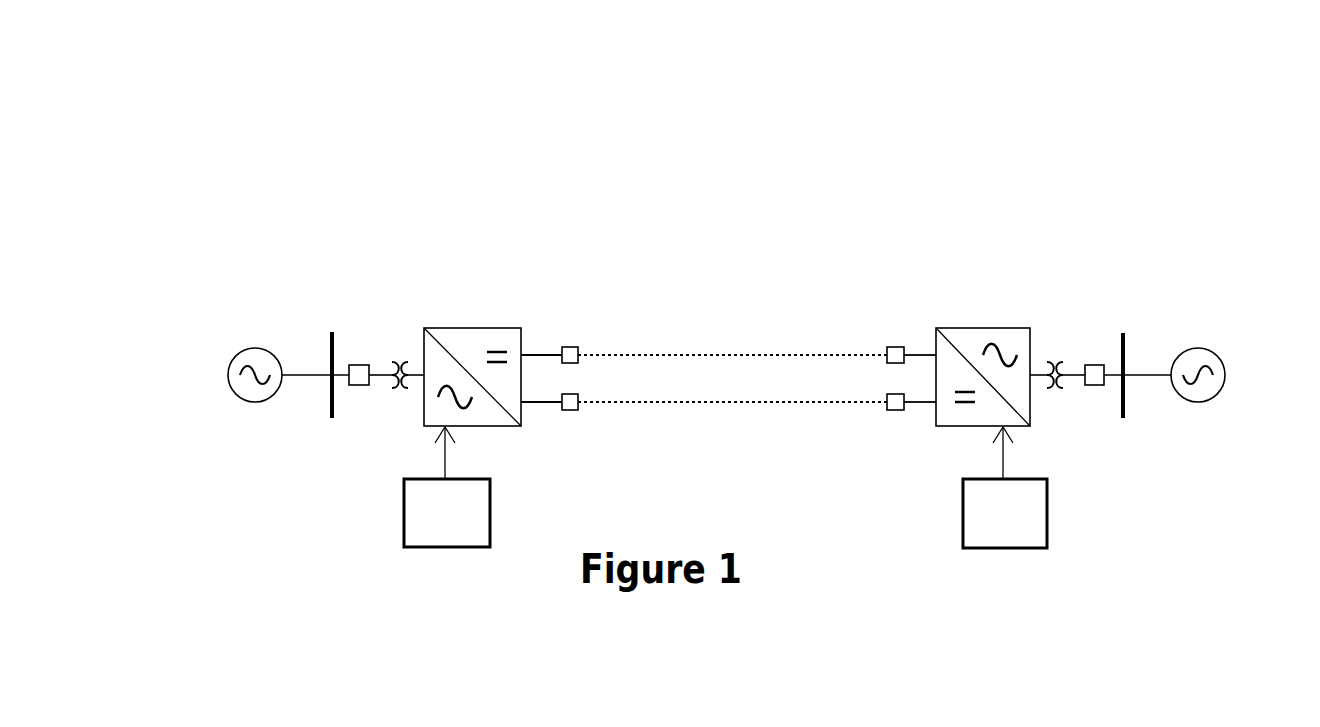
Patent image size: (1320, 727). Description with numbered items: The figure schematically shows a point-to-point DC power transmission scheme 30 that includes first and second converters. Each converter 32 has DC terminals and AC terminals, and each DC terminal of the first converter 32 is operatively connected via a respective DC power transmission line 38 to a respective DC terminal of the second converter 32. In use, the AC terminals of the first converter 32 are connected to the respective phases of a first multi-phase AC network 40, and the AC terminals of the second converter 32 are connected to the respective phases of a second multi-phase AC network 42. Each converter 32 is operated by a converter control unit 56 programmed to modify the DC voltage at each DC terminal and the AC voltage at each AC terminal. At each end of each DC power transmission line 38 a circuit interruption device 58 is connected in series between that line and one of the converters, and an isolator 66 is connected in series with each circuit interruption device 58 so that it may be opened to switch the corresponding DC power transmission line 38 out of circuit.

The DC power transmission scheme 30 is at (592, 160).
The converter 32 is at (462, 340).
The DC power transmission line 38 is at (725, 388).
The first multi-phase AC network 40 is at (250, 357).
The second multi-phase AC network 42 is at (1195, 357).
The converter control unit 56 is at (725, 487).
The circuit interruption device 58 is at (725, 366).
The isolator 66 is at (572, 347).